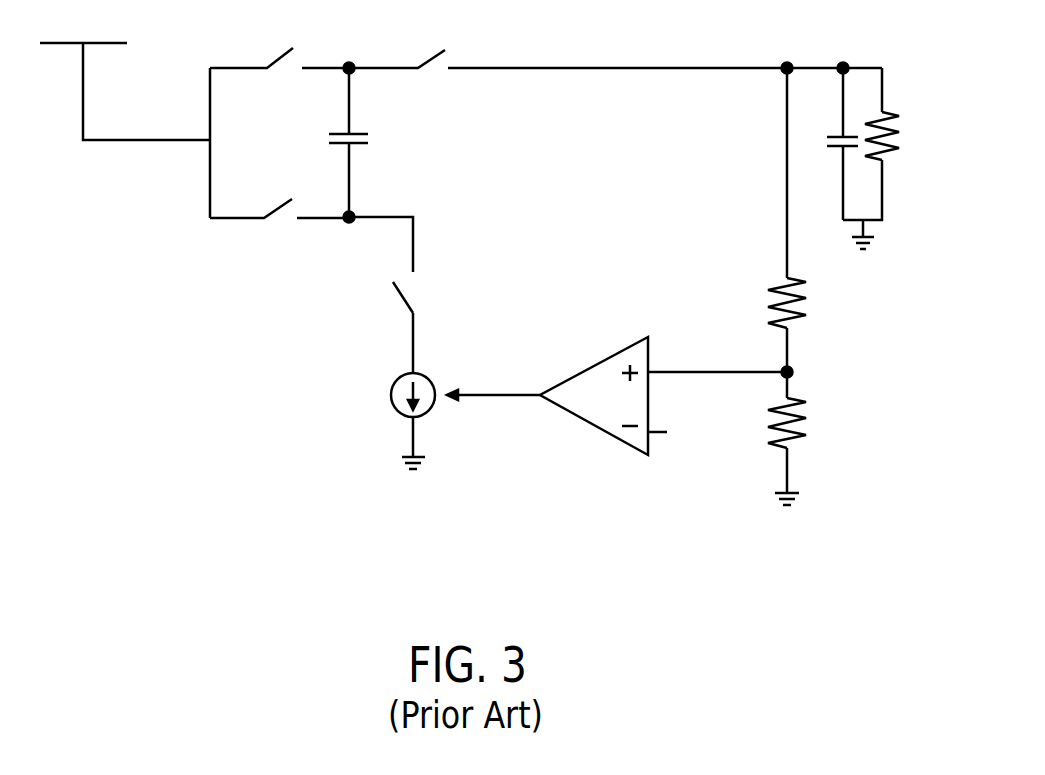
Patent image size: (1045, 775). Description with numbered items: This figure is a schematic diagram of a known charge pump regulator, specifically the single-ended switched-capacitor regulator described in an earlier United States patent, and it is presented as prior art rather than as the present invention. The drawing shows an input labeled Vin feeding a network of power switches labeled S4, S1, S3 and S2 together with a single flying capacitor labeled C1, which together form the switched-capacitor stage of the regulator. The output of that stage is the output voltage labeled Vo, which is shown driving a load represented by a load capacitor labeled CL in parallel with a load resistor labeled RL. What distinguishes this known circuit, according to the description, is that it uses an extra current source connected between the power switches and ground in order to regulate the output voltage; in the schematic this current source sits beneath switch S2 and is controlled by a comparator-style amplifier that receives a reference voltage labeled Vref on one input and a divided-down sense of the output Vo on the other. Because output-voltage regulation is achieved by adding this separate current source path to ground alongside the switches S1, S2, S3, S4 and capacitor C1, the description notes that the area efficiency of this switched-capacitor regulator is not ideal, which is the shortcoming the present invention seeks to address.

The input voltage Vin is at (125, 123).
The switch S4 is at (279, 40).
The switch S1 is at (568, 41).
The switch S3 is at (279, 192).
The switch S2 is at (401, 295).
The capacitor C1 is at (369, 143).
The reference voltage Vref is at (684, 439).
The output voltage Vo is at (838, 51).
The load capacitor CL is at (827, 144).
The load resistor RL is at (889, 158).